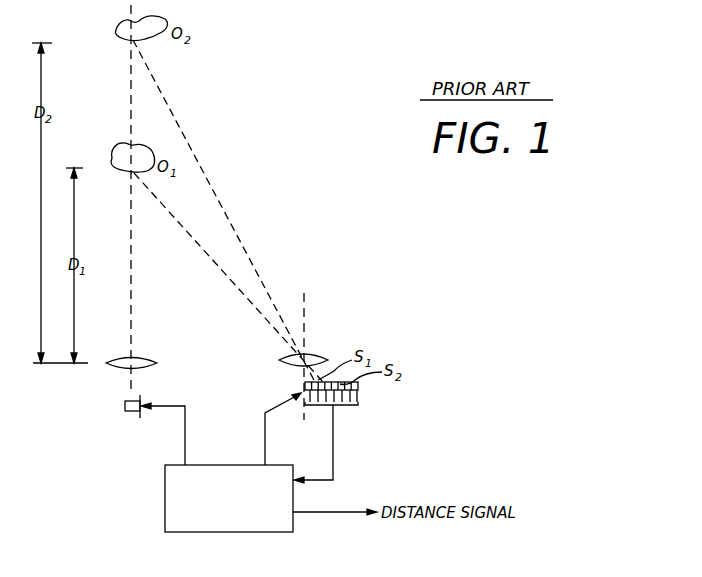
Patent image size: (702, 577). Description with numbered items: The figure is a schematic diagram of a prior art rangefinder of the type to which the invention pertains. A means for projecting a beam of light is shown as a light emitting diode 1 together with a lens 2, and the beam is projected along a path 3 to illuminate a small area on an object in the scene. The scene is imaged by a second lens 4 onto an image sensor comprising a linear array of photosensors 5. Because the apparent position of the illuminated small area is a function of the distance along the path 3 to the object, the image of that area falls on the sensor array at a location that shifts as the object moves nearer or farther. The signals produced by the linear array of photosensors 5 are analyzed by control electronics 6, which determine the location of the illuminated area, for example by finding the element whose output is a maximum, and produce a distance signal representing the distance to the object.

The light emitting diode 1 is at (125, 411).
The lens 2 is at (155, 362).
The path 3 is at (137, 295).
The second lens 4 is at (317, 355).
The linear array of photosensors 5 is at (360, 390).
The control electronics 6 is at (164, 493).